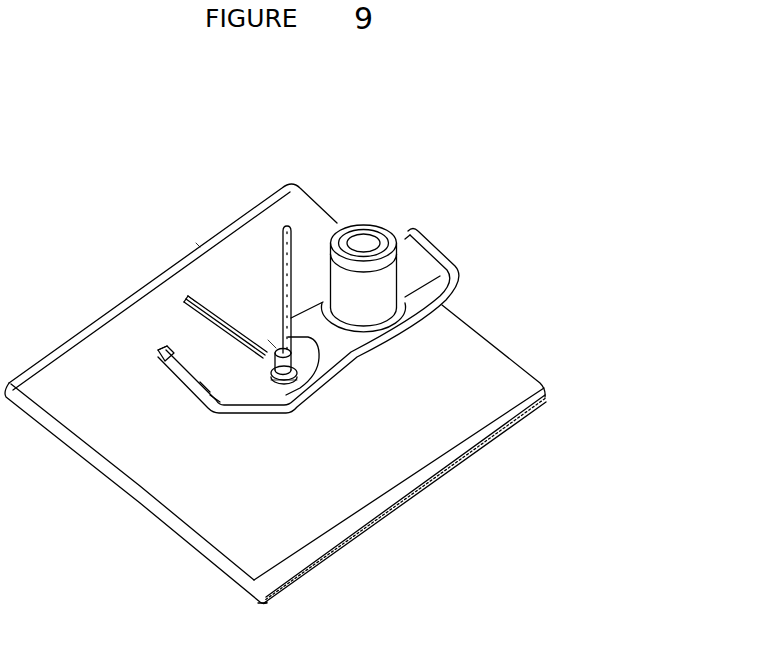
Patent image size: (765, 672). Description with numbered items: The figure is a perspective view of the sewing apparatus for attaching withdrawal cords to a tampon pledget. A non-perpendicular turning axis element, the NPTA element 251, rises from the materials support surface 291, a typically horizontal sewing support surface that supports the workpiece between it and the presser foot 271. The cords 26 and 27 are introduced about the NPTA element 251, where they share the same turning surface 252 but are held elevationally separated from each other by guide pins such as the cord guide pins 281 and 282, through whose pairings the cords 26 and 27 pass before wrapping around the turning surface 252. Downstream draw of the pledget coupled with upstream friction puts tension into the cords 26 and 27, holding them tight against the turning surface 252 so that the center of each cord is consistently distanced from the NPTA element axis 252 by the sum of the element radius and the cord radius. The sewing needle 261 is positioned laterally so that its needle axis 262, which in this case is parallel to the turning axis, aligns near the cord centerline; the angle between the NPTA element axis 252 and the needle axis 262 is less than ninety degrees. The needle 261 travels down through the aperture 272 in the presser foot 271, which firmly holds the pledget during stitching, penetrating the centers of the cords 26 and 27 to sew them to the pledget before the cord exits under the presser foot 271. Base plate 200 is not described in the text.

The base plate 200 is at (491, 382).
The sewing needle axis 262 is at (293, 246).
The sewing needle 261 is at (281, 226).
The presser foot 271 is at (352, 358).
The aperture 272 is at (299, 370).
The cord 27 is at (194, 312).
The cord guide pin 282 is at (269, 385).
The NPTA element axis 252 is at (268, 338).
The non-perpendicular turning axis element 251 is at (205, 301).
The cord 26 is at (198, 243).
The cord guide pin 281 is at (252, 366).
The materials support surface 291 is at (293, 522).